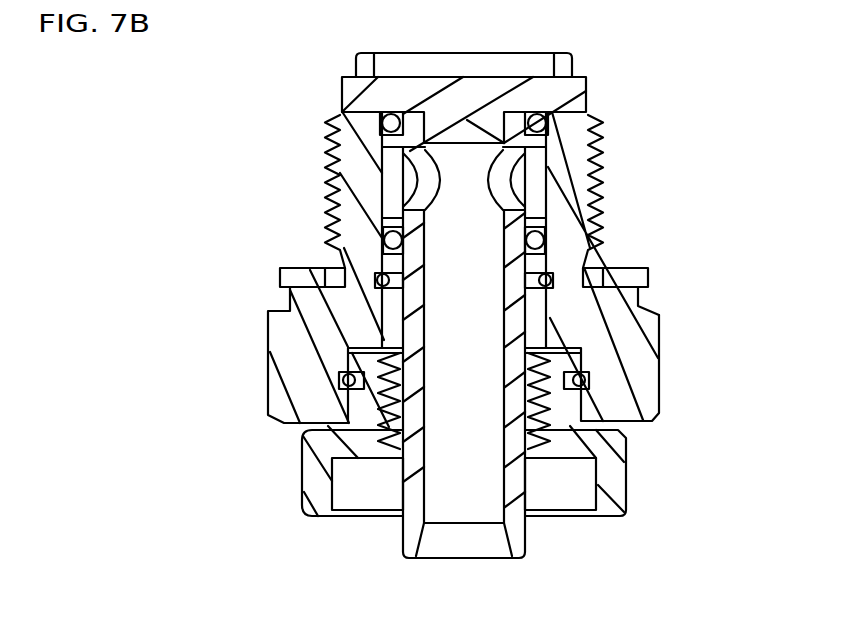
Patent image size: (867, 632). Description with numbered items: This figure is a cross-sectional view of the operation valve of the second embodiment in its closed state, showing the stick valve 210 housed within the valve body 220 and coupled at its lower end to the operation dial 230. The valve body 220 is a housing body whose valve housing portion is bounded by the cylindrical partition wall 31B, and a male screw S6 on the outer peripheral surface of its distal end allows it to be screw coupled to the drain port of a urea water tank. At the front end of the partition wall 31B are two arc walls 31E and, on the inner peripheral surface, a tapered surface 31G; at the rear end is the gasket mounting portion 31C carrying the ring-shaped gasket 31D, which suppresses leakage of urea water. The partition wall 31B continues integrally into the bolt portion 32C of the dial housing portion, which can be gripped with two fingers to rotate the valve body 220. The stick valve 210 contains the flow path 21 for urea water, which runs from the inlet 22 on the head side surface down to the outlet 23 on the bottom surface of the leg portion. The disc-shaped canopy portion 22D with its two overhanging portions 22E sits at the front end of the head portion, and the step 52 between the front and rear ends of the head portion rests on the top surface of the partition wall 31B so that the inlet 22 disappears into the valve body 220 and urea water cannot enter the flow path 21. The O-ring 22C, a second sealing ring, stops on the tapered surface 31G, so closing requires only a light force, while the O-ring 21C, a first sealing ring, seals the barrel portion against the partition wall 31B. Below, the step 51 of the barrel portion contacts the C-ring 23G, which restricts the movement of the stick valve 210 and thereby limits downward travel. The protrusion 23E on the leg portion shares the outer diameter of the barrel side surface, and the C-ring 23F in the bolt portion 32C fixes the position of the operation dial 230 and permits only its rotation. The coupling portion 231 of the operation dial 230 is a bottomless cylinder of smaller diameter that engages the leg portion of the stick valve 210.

The arc wall 31E is at (466, 52).
The canopy portion 22D is at (478, 88).
The overhanging portion 22E is at (587, 100).
The step 52 is at (360, 108).
The O-ring 22C is at (545, 124).
The inlet 22 is at (417, 180).
The partition wall 31B is at (372, 131).
The tapered surface 31G is at (557, 119).
The male screw S6 is at (336, 219).
The gasket 31D is at (637, 279).
The C-ring 23G is at (381, 280).
The O-ring 21C is at (540, 240).
The step 51 is at (400, 289).
The valve body 220 is at (665, 354).
The gasket mounting portion 31C is at (624, 297).
The bolt portion 32C is at (656, 343).
The protrusion 23E is at (378, 350).
The C-ring 23F is at (346, 383).
The stick valve 210 is at (425, 413).
The flow path 21 is at (458, 412).
The outlet 23 is at (463, 552).
The coupling portion 231 is at (313, 492).
The operation dial 230 is at (627, 461).